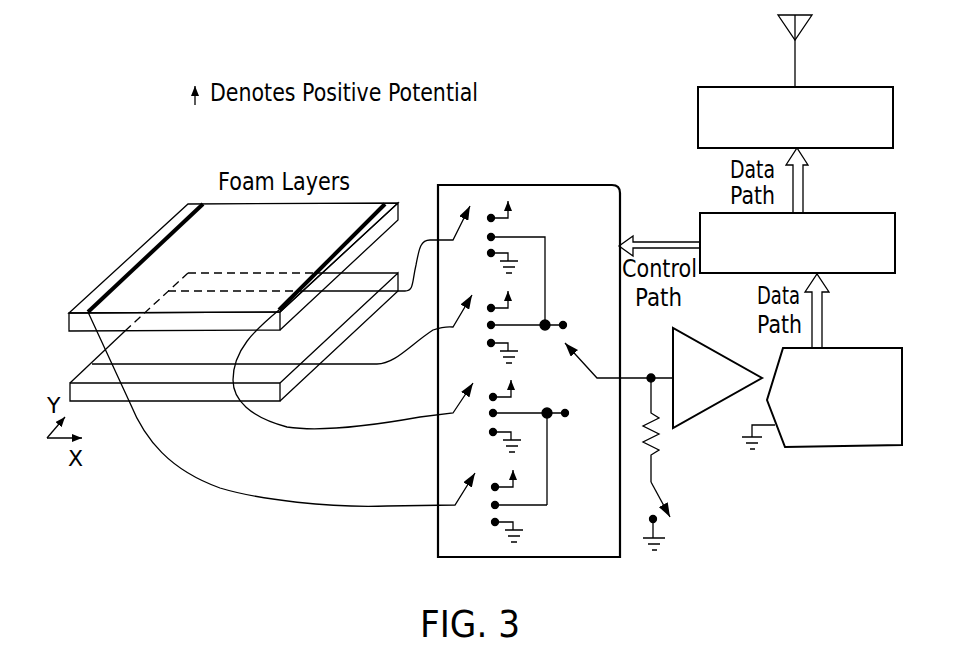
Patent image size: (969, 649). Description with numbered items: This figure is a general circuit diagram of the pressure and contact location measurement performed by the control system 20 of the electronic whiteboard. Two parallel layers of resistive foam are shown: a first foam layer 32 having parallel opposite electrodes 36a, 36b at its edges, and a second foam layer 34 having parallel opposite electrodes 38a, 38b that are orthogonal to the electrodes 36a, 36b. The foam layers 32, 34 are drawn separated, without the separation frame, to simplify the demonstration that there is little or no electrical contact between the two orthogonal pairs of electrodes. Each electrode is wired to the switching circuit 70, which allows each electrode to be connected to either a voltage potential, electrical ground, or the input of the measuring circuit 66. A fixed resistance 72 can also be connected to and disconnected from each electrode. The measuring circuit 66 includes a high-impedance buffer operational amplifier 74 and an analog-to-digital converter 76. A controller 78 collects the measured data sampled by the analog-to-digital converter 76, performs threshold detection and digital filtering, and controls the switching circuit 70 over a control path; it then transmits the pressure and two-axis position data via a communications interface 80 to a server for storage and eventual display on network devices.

The control system 20 is at (610, 83).
The first foam layer 32 is at (245, 249).
The second foam layer 34 is at (303, 358).
The electrode 36a is at (182, 222).
The electrode 36b is at (387, 203).
The electrode 38a is at (365, 291).
The electrode 38b is at (192, 366).
The measuring circuit 66 is at (747, 488).
The switching circuit 70 is at (620, 190).
The fixed resistance 72 is at (660, 453).
The operational amplifier 74 is at (716, 346).
The analog-to-digital converter 76 is at (861, 348).
The controller 78 is at (857, 212).
The communications interface 80 is at (850, 87).